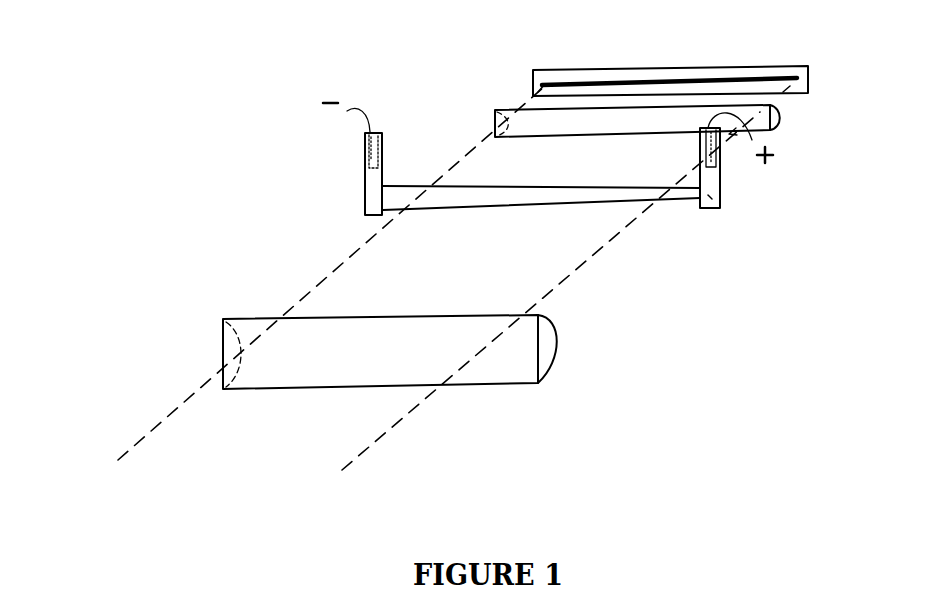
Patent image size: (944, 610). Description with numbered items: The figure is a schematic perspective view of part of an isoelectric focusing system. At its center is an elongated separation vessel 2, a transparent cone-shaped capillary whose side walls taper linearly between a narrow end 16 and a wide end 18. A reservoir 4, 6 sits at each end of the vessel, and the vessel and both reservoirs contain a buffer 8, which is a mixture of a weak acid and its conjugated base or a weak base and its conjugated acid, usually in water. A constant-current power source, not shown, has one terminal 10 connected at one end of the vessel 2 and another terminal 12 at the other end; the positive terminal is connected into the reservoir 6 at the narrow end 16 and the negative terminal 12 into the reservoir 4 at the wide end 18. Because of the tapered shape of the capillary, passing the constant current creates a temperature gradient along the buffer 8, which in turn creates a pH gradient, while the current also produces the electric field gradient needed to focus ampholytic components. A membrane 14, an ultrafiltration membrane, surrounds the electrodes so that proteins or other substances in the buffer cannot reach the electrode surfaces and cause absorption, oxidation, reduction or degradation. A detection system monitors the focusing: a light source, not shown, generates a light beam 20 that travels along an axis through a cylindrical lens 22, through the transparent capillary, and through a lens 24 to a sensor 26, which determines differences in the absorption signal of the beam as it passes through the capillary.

The separation vessel 2 is at (417, 185).
The reservoir 4 is at (365, 198).
The reservoir 6 is at (712, 183).
The buffer 8 is at (710, 197).
The terminal 10 is at (752, 138).
The terminal 12 is at (355, 105).
The membrane 14 is at (700, 160).
The narrow end 16 is at (700, 197).
The wide end 18 is at (382, 187).
The light beam 20 is at (142, 436).
The cylindrical lens 22 is at (547, 332).
The lens 24 is at (496, 112).
The sensor 26 is at (552, 70).